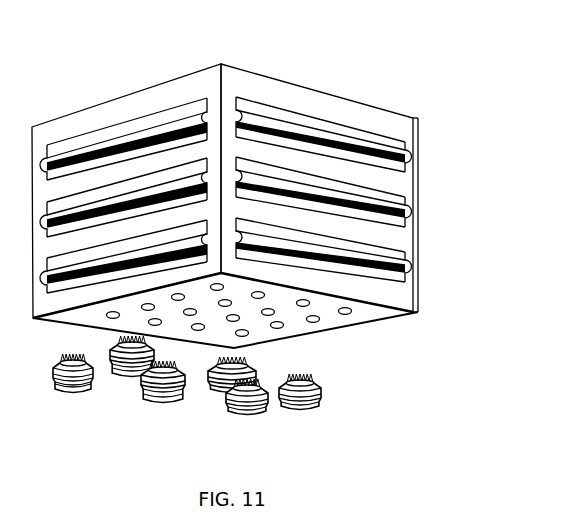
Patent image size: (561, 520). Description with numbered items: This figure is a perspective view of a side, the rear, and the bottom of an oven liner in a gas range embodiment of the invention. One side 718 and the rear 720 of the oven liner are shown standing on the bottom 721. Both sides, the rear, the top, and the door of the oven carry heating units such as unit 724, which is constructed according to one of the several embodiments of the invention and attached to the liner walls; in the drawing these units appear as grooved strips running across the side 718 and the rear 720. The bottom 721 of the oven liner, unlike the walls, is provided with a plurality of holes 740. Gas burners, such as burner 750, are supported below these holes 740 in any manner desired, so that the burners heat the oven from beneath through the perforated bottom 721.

The rear 720 is at (157, 98).
The side 718 is at (282, 97).
The heating unit 724 is at (400, 158).
The bottom 721 is at (373, 312).
The holes 740 is at (315, 321).
The burner 750 is at (317, 402).